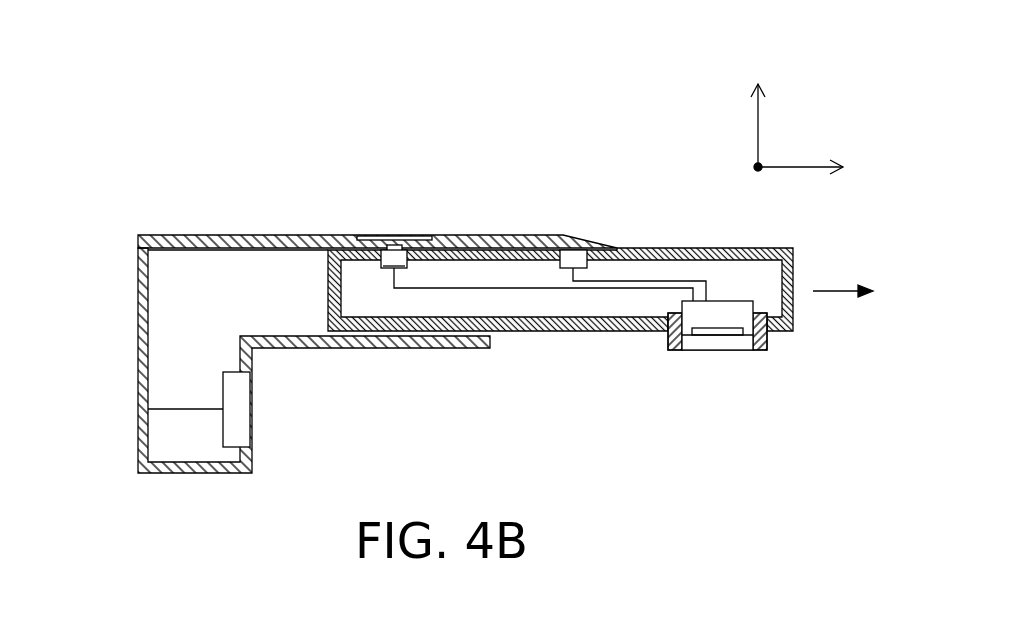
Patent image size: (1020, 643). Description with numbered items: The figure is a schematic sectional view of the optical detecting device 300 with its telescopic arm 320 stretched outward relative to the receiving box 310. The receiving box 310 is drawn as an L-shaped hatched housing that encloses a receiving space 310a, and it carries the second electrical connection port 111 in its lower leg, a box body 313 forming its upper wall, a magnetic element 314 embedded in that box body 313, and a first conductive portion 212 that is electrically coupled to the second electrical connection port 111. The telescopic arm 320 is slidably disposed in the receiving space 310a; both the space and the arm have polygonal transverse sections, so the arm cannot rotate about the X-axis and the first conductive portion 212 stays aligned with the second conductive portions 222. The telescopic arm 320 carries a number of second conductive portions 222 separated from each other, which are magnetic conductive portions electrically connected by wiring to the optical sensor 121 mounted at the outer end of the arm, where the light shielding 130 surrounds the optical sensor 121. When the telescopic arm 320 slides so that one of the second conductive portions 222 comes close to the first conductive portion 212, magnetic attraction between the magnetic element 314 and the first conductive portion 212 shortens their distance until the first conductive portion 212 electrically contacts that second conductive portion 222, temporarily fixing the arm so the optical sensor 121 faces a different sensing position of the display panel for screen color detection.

The optical detecting device 300 is at (157, 110).
The receiving box 310 is at (178, 466).
The receiving space 310a is at (270, 287).
The box body 313 is at (524, 243).
The magnetic element 314 is at (362, 238).
The telescopic arm 320 is at (328, 280).
The first conductive portion 212 is at (393, 248).
The second conductive portions 222 is at (405, 264).
The light shielding 130 is at (762, 351).
The optical sensor 121 is at (722, 316).
The second electrical connection port 111 is at (238, 426).